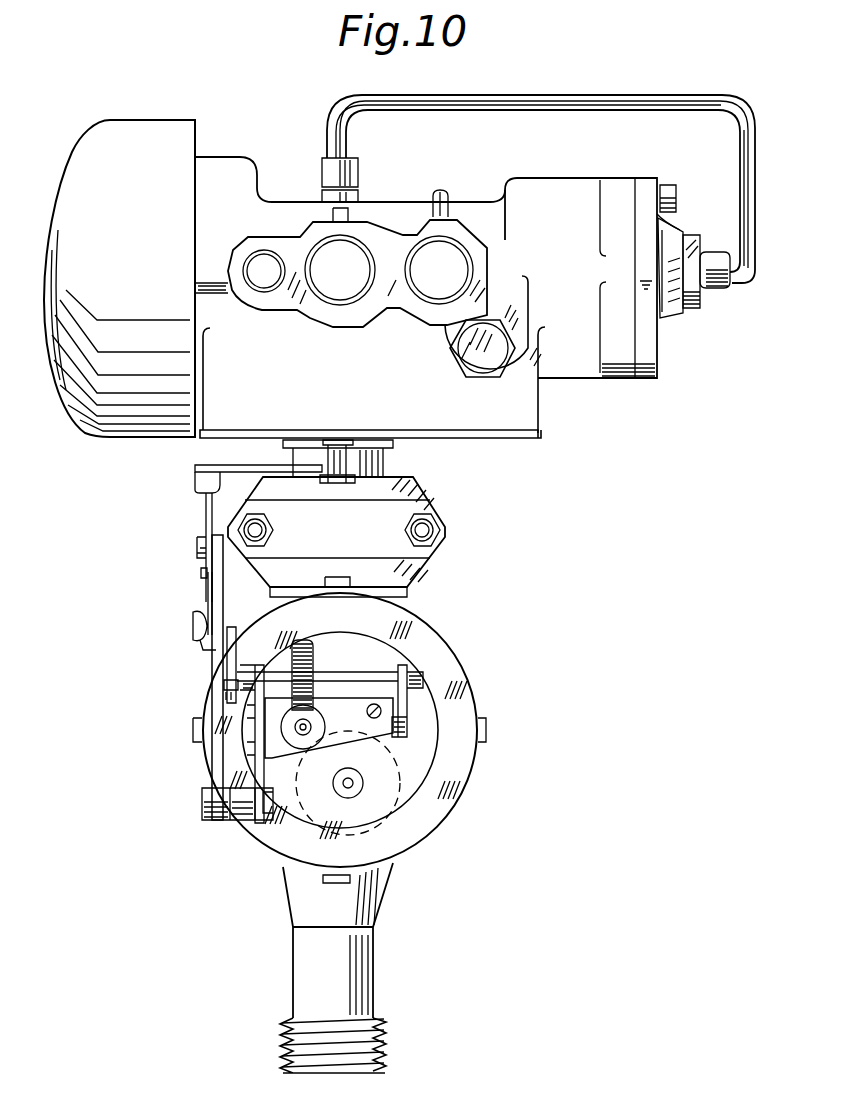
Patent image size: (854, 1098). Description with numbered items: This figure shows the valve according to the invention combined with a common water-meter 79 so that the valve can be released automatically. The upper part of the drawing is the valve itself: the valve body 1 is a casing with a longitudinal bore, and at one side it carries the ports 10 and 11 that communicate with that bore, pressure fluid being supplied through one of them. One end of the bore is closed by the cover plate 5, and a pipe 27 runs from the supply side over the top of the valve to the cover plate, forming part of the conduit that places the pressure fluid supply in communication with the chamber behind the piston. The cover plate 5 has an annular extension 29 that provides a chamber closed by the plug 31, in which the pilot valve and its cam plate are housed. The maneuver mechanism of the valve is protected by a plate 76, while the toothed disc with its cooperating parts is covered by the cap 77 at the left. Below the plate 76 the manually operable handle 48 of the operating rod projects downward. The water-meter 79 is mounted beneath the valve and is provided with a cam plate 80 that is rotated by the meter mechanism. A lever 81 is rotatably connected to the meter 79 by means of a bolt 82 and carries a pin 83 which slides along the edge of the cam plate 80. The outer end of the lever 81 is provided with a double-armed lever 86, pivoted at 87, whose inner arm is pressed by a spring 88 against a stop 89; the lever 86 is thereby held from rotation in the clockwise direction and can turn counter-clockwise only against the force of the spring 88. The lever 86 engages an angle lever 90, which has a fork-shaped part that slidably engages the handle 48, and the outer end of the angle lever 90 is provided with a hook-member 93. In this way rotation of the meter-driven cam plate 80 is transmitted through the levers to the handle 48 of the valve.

The valve body 1 is at (555, 180).
The cover plate 5 is at (665, 222).
The port 10 is at (340, 270).
The port 11 is at (439, 270).
The pipe 27 is at (616, 96).
The annular extension 29 is at (668, 318).
The plug 31 is at (692, 309).
The handle 48 is at (358, 463).
The plate 76 is at (526, 440).
The cap 77 is at (72, 156).
The water-meter 79 is at (490, 672).
The cam plate 80 is at (243, 627).
The lever 81 is at (215, 653).
The bolt 82 is at (206, 816).
The pin 83 is at (226, 692).
The double-armed lever 86 is at (205, 513).
The pivot 87 is at (200, 555).
The spring 88 is at (207, 598).
The stop 89 is at (202, 575).
The angle lever 90 is at (240, 463).
The hook-member 93 is at (195, 486).